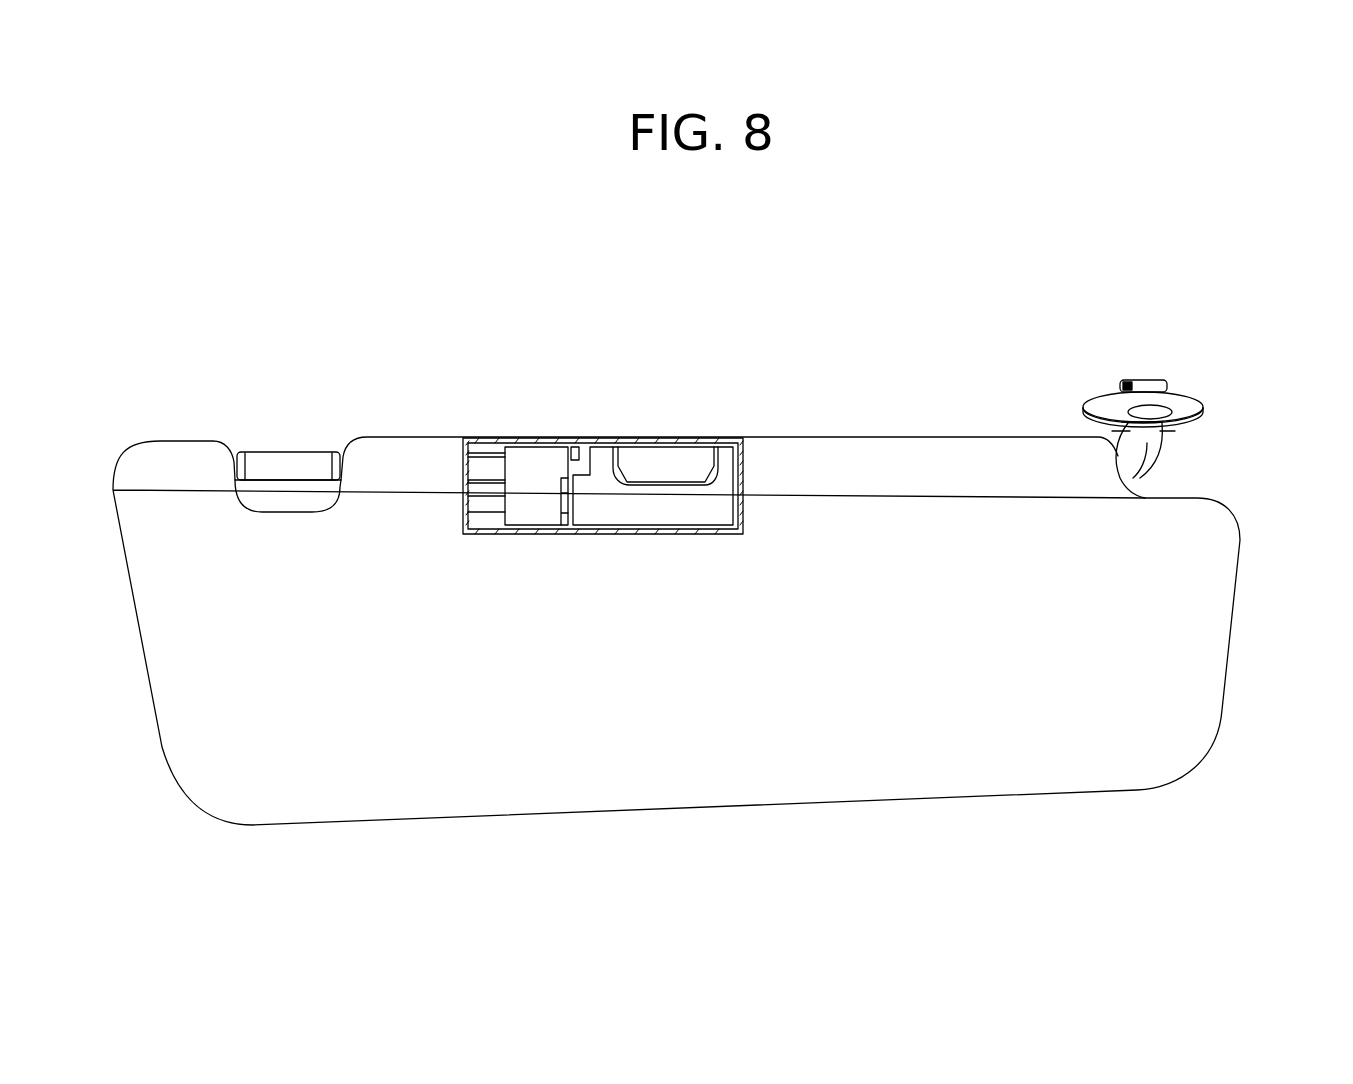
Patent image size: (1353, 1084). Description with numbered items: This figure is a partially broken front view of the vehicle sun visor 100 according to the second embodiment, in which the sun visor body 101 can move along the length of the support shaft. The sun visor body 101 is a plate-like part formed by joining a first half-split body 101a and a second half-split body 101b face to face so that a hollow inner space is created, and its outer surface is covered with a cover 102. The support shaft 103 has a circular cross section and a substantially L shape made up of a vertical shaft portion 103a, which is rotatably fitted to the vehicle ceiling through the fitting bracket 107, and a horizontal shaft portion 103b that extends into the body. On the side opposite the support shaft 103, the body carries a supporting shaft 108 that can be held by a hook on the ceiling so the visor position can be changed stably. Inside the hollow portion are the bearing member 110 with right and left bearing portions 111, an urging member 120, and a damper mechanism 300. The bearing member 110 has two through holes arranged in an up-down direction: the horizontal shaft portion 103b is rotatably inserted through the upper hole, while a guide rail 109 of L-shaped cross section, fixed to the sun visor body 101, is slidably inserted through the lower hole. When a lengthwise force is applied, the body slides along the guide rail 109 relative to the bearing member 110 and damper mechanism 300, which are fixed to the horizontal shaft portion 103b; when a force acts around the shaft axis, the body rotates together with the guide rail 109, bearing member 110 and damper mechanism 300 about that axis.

The vehicle sun visor 100 is at (431, 298).
The sun visor body 101 is at (883, 437).
The first half-split body 101a is at (486, 481).
The second half-split body 101b is at (480, 437).
The cover 102 is at (518, 530).
The support shaft 103 is at (1137, 457).
The vertical shaft portion 103a is at (1146, 432).
The horizontal shaft portion 103b is at (577, 458).
The fitting bracket 107 is at (493, 447).
The supporting shaft 108 is at (282, 450).
The guide rail 109 is at (485, 507).
The bearing member 110 is at (665, 513).
The bearing portions 111 is at (603, 460).
The urging member 120 is at (667, 458).
The damper mechanism 300 is at (538, 465).